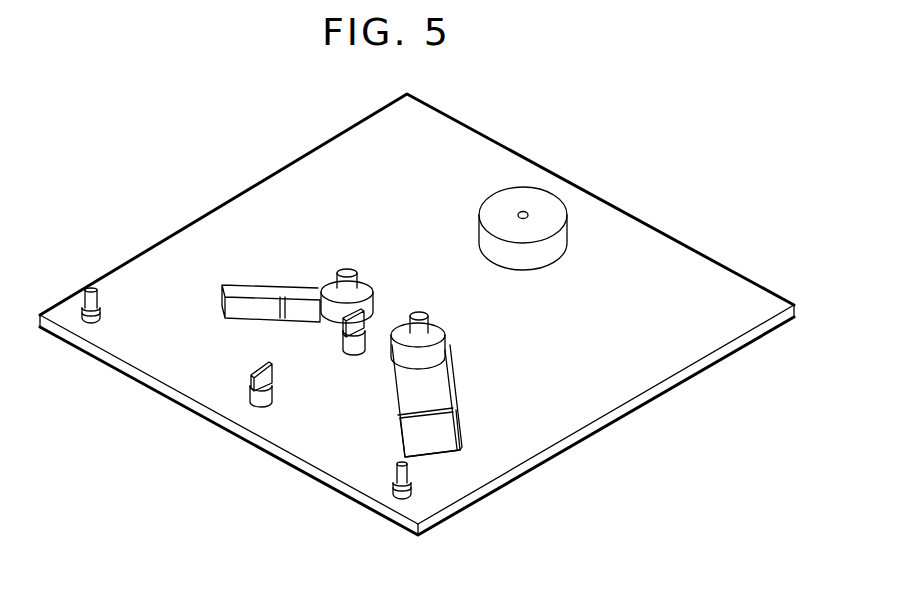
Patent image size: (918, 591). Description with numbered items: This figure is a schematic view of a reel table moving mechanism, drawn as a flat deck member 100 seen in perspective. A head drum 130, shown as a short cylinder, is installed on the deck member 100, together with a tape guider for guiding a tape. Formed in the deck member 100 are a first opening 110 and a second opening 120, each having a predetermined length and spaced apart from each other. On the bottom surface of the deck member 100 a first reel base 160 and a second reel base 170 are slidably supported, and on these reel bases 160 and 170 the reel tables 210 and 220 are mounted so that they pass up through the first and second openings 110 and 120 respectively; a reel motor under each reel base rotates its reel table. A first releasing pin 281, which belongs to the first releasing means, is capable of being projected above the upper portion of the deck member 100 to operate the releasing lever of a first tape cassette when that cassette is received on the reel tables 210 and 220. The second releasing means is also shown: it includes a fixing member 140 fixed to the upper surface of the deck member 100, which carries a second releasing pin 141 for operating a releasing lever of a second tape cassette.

The deck member 100 is at (698, 251).
The first opening 110 is at (238, 307).
The second opening 120 is at (448, 433).
The head drum 130 is at (548, 195).
The fixing member 140 is at (200, 437).
The second releasing pin 141 is at (275, 401).
The first reel base 160 is at (308, 303).
The second reel base 170 is at (442, 377).
The reel table 210 is at (333, 280).
The reel table 220 is at (437, 326).
The first releasing pin 281 is at (375, 313).